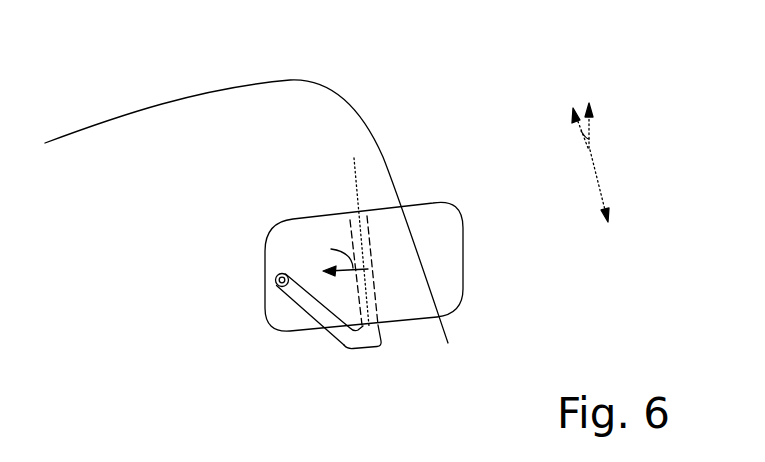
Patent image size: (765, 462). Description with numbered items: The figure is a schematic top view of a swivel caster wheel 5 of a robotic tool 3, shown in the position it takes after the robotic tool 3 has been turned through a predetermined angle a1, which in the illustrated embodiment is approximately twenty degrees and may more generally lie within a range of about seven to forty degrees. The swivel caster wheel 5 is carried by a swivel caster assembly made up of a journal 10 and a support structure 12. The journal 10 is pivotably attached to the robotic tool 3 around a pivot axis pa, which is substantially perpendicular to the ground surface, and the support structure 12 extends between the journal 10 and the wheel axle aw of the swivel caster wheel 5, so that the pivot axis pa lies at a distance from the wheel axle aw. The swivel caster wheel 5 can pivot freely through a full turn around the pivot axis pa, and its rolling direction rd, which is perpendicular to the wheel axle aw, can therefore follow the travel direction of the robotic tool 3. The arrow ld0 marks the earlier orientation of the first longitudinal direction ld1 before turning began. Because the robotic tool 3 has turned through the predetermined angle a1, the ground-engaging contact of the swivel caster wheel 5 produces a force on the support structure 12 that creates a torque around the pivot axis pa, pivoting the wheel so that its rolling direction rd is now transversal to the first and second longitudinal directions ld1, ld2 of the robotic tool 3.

The robotic tool 3 is at (383, 160).
The swivel caster wheel 5 is at (465, 285).
The journal 10 is at (281, 288).
The support structure 12 is at (327, 321).
The pivot axis pa is at (275, 280).
The wheel axle aw is at (355, 186).
The rolling direction rd is at (330, 254).
The predetermined angle a1 is at (587, 137).
The previous direction of the first longitudinal direction ld0 is at (593, 147).
The first longitudinal direction ld1 is at (583, 142).
The second longitudinal direction ld2 is at (598, 197).